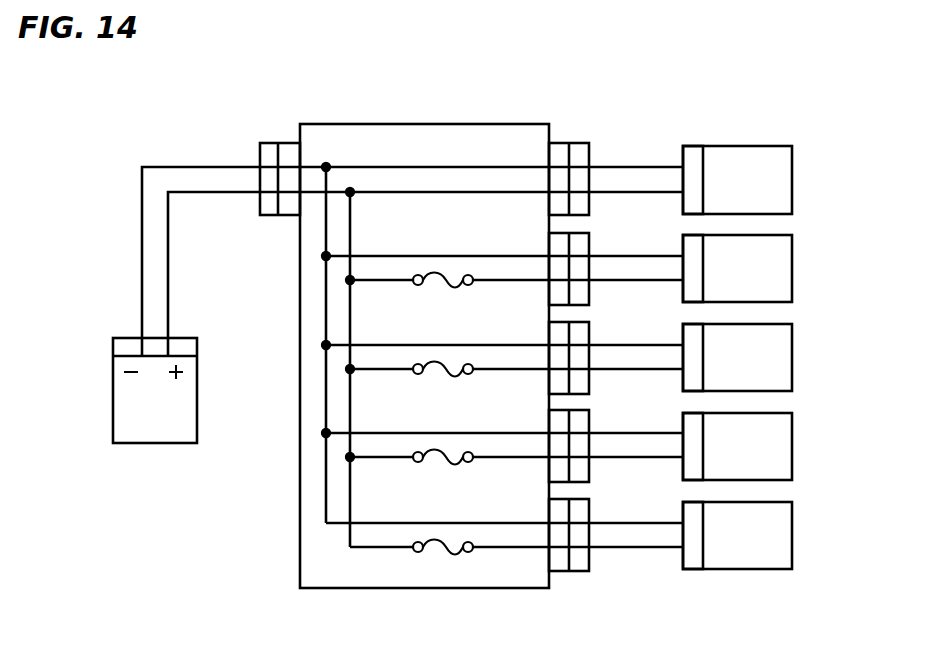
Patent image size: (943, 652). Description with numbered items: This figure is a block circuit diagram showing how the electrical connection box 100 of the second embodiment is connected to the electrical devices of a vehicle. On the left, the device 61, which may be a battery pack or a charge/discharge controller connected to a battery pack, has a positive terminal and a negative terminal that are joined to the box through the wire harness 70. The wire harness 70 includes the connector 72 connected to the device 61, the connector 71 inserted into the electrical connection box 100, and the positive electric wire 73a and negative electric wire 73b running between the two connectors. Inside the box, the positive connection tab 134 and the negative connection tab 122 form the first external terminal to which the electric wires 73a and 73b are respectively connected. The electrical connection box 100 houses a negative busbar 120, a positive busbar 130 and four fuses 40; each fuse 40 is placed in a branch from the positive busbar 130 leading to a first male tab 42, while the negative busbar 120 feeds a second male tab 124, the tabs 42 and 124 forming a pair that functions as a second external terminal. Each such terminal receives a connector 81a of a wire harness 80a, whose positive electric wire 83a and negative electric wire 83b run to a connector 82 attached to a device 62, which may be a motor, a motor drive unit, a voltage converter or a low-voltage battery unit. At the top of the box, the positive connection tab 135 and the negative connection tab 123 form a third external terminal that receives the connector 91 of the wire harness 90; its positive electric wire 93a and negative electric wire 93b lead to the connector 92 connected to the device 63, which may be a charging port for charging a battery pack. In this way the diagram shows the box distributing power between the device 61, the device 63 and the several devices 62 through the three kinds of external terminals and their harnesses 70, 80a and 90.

The electrical connection box 100 is at (489, 112).
The wire harness 70 is at (213, 133).
The connector 71 is at (270, 143).
The negative connection tab 122 is at (290, 160).
The positive connection tab 134 is at (287, 215).
The device 61 is at (155, 444).
The connector 72 is at (120, 338).
The negative electric wire 73b is at (140, 255).
The positive electric wire 73a is at (168, 253).
The negative connection tab 123 is at (556, 165).
The positive connection tab 135 is at (556, 194).
The negative busbar 120 is at (326, 392).
The positive busbar 130 is at (350, 535).
The second male tab 124 is at (556, 254).
The first male tab 42 is at (556, 283).
The fuse 40 is at (446, 289).
The connector 91 is at (578, 143).
The wire harness 90 is at (643, 128).
The negative electric wire 93b is at (650, 170).
The positive electric wire 93a is at (612, 195).
The connector 92 is at (693, 146).
The device 63 is at (794, 178).
The device 62 is at (794, 268).
The wire harness 80a is at (645, 288).
The connector 81a is at (575, 574).
The positive electric wire 83a is at (605, 549).
The negative electric wire 83b is at (648, 526).
The connector 82 is at (697, 571).